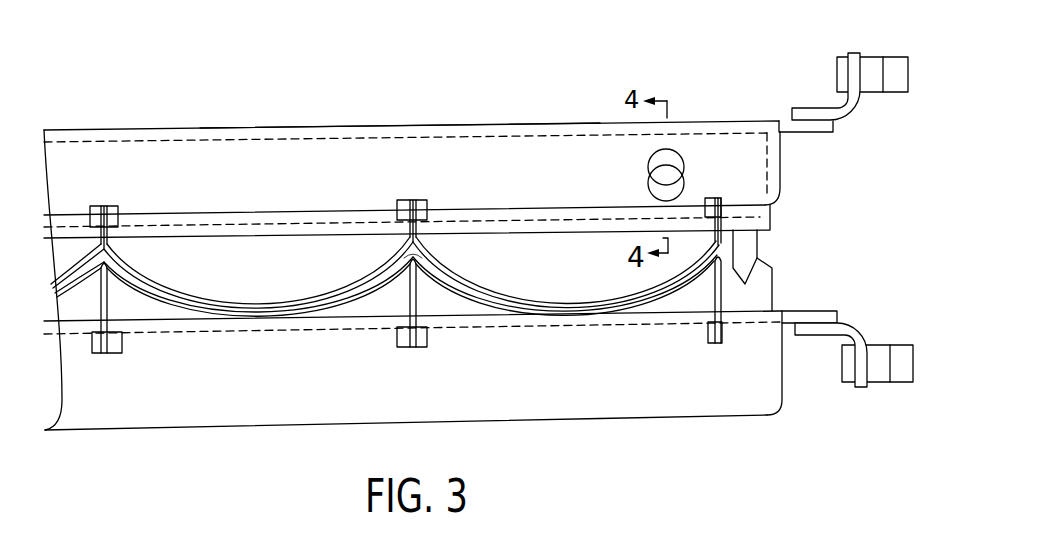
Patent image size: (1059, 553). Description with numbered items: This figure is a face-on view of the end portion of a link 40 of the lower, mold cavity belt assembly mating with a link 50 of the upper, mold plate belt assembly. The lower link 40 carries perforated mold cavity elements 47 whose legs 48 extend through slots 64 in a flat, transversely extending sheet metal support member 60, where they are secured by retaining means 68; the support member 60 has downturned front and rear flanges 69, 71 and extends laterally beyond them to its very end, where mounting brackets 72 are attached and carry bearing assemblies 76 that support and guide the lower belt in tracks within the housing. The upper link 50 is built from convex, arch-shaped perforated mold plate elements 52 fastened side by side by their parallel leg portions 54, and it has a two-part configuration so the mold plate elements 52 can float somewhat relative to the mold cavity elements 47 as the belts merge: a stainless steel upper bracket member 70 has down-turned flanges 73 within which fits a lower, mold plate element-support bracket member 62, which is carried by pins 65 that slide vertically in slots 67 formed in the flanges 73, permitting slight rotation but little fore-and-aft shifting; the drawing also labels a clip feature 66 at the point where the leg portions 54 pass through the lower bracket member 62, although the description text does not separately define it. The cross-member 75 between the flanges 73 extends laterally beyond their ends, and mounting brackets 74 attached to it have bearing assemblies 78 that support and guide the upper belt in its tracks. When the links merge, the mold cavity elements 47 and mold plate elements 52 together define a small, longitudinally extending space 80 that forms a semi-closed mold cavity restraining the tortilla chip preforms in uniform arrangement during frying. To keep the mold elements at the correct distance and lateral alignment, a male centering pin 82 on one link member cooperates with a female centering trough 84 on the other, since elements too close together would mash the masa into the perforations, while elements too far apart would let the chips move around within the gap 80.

The links 40 is at (803, 404).
The mold cavity elements 47 is at (355, 306).
The legs 48 is at (718, 287).
The links 50 is at (822, 176).
The mold plate elements 52 is at (505, 294).
The parallel leg portions 54 is at (410, 240).
The support member 60 is at (143, 328).
The lower, mold plate element-support bracket member 62 is at (182, 232).
The slots 64 is at (108, 322).
The pins 65 is at (675, 173).
The upper clip 66 is at (110, 242).
The slots 67 is at (673, 158).
The retaining means 68 is at (407, 340).
The front flange 69 is at (532, 402).
The upper bracket member 70 is at (397, 126).
The rear flange 71 is at (678, 404).
The mounting brackets 72 is at (843, 331).
The flanges 73 is at (273, 150).
The mounting brackets 74 is at (820, 112).
The cross-member 75 is at (507, 136).
The bearing assemblies 76 is at (905, 383).
The bearing assemblies 78 is at (880, 57).
The space 80 is at (401, 264).
The male centering pin 82 is at (750, 251).
The female centering trough 84 is at (758, 293).